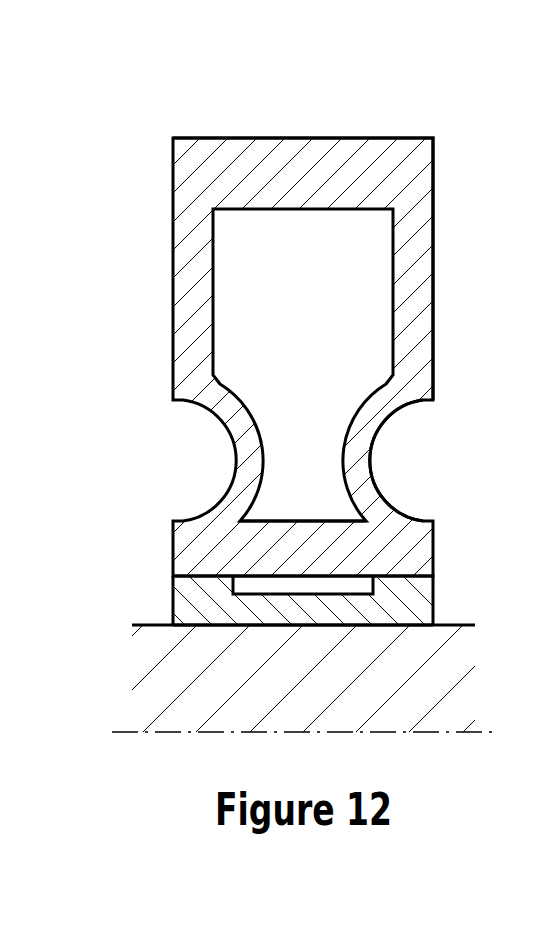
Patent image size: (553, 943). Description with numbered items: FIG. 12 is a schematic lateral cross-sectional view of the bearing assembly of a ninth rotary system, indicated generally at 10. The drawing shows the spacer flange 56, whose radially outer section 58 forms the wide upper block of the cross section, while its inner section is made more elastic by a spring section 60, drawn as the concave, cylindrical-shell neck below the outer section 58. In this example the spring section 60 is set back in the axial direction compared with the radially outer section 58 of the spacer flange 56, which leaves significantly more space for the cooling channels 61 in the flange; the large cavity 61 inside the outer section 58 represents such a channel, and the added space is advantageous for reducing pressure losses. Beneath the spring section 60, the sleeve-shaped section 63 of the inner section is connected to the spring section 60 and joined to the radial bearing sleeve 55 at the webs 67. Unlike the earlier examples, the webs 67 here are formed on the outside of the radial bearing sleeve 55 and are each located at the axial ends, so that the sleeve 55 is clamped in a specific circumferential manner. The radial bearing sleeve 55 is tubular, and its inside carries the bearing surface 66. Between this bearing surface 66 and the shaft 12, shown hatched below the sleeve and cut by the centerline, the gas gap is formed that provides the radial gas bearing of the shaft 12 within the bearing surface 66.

The component assembly 10 is at (101, 99).
The shaft 12 is at (453, 682).
The radial bearing sleeve 55 is at (415, 608).
The spacer flange 56 is at (417, 358).
The radially outer section of the spacer flange 58 is at (463, 182).
The spring section 60 is at (402, 462).
The cooling channel 61 is at (318, 302).
The sleeve-shaped section 63 is at (307, 547).
The bearing surface 66 is at (302, 627).
The web 67 is at (198, 583).